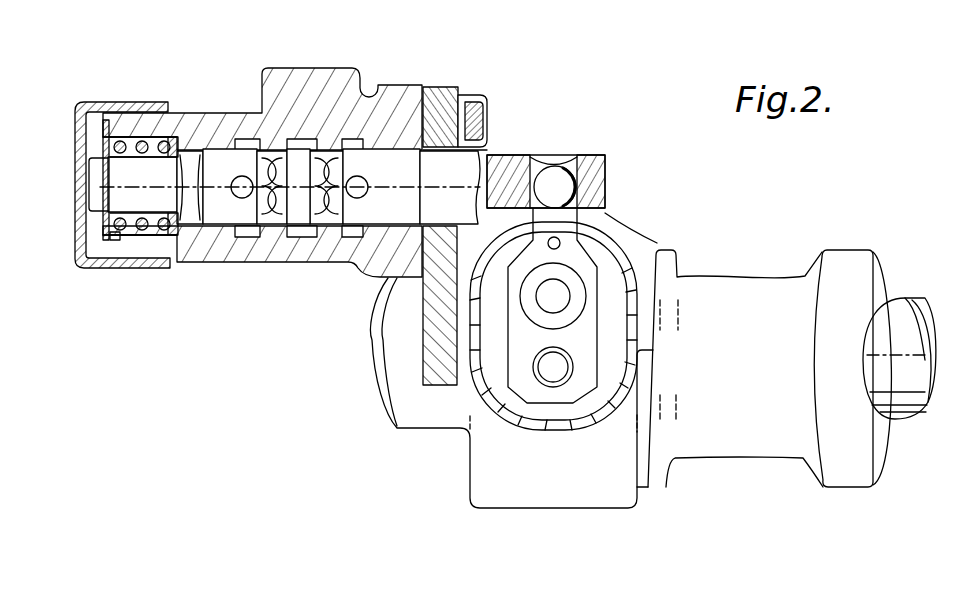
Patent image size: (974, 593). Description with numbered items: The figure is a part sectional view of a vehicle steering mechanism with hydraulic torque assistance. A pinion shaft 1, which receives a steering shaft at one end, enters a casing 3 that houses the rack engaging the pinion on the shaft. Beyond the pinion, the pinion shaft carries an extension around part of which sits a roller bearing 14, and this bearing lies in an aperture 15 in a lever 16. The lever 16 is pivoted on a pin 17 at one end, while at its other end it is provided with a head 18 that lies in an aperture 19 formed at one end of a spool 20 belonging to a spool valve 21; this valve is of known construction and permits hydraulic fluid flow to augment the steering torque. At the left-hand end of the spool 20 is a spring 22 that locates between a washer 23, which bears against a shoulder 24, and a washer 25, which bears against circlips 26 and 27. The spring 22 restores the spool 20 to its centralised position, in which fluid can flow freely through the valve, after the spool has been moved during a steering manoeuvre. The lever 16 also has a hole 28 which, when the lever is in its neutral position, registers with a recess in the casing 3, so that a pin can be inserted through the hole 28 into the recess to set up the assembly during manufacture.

The pinion shaft 1 is at (556, 294).
The casing 3 is at (492, 468).
The roller bearing 14 is at (663, 246).
The aperture 15 is at (577, 312).
The lever 16 is at (513, 310).
The pin 17 is at (548, 378).
The head 18 is at (558, 182).
The aperture 19 is at (540, 163).
The spool 20 is at (377, 167).
The spool valve 21 is at (308, 66).
The spring 22 is at (141, 235).
The washer 23 is at (180, 235).
The shoulder 24 is at (183, 136).
The washer 25 is at (122, 236).
The circlip 26 is at (106, 120).
The circlip 27 is at (102, 153).
The hole 28 is at (559, 241).